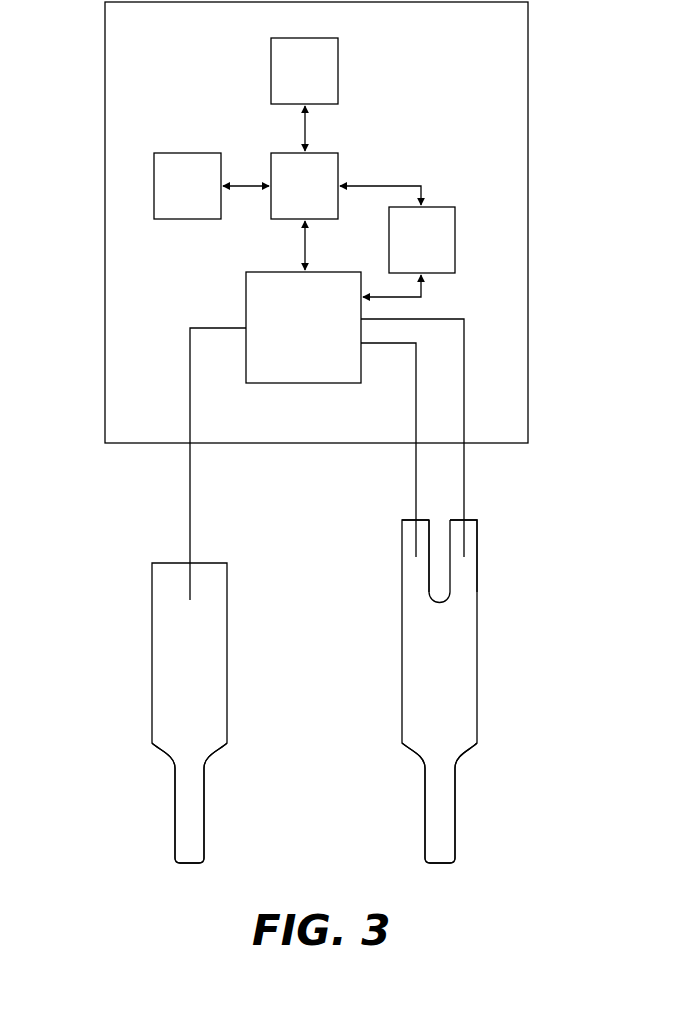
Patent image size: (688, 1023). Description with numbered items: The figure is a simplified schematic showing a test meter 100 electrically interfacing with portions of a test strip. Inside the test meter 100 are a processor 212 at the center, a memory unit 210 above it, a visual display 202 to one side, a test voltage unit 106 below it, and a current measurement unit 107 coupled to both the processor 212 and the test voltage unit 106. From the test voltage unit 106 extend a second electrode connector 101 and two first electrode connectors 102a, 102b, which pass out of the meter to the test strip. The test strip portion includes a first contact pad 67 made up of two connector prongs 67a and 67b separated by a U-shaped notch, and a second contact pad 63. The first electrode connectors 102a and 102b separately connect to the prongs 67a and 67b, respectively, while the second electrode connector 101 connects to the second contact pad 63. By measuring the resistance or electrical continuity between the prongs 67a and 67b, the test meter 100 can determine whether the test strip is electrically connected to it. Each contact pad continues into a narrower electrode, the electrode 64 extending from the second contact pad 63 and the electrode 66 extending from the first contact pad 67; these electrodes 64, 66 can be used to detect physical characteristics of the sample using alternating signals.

The test meter 100 is at (126, 445).
The second electrode connector 101 is at (190, 428).
The first electrode connector 102a is at (416, 428).
The first electrode connector 102b is at (465, 427).
The test voltage unit 106 is at (327, 339).
The current measurement unit 107 is at (446, 253).
The visual display 202 is at (211, 200).
The memory unit 210 is at (328, 85).
The processor 212 is at (328, 200).
The second contact pad 63 is at (190, 607).
The electrode 64 is at (188, 745).
The electrode 66 is at (440, 747).
The first contact pad 67 is at (503, 517).
The connector prong 67a is at (417, 565).
The connector prong 67b is at (463, 565).